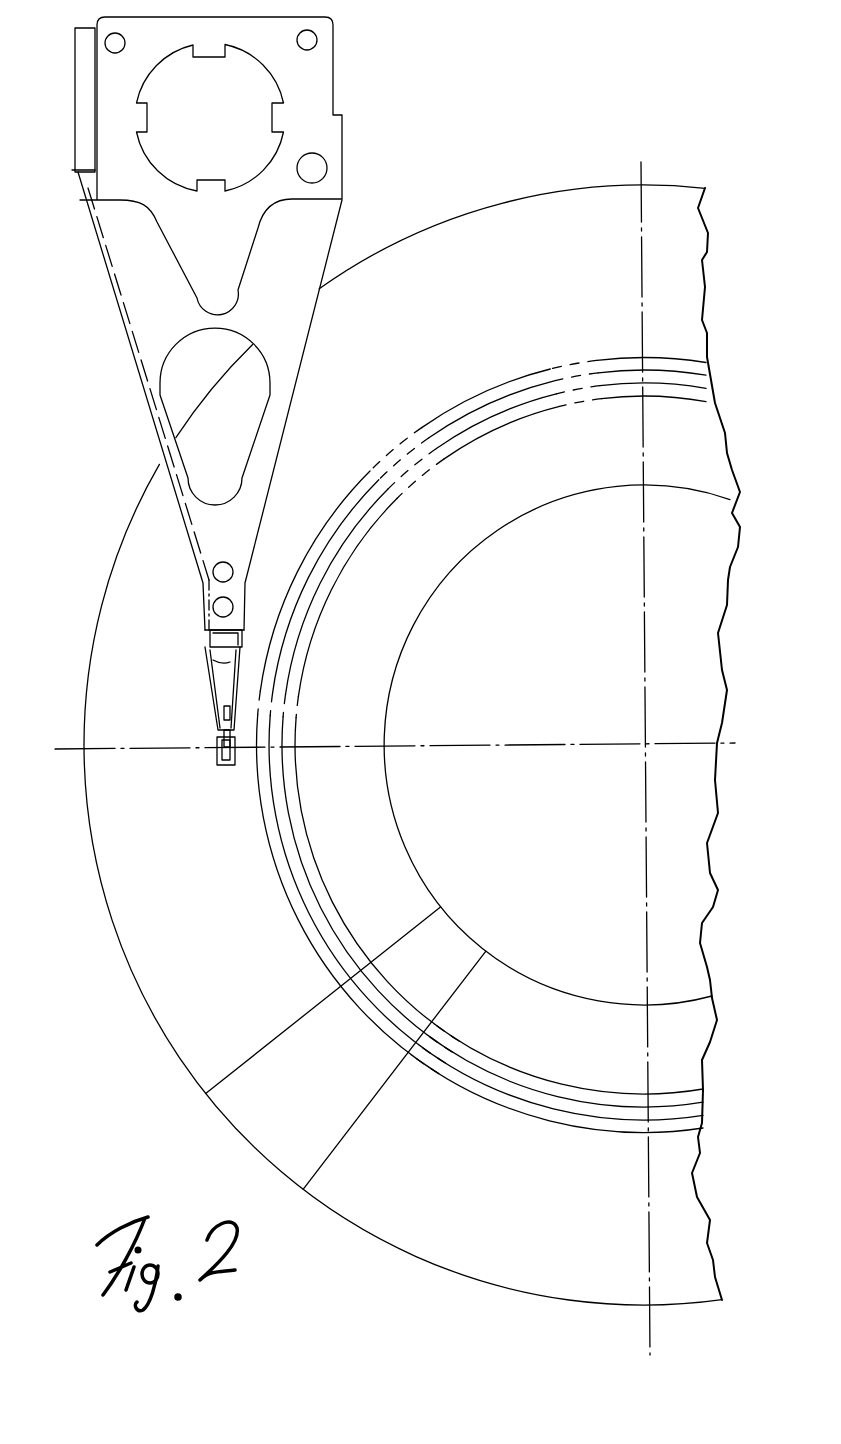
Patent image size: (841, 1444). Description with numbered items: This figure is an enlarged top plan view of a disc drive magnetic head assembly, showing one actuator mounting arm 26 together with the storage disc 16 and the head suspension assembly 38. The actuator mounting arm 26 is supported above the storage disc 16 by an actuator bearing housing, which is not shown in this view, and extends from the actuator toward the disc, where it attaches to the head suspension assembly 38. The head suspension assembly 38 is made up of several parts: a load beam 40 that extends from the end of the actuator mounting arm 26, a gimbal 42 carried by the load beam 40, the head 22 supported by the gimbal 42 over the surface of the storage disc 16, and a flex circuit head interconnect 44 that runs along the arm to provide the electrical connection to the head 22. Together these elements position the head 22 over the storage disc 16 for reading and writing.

The storage disc 16 is at (508, 190).
The head 22 is at (217, 762).
The actuator mounting arm 26 is at (123, 348).
The head suspension assembly 38 is at (201, 642).
The load beam 40 is at (257, 622).
The gimbal 42 is at (219, 741).
The flex circuit head interconnect 44 is at (150, 425).